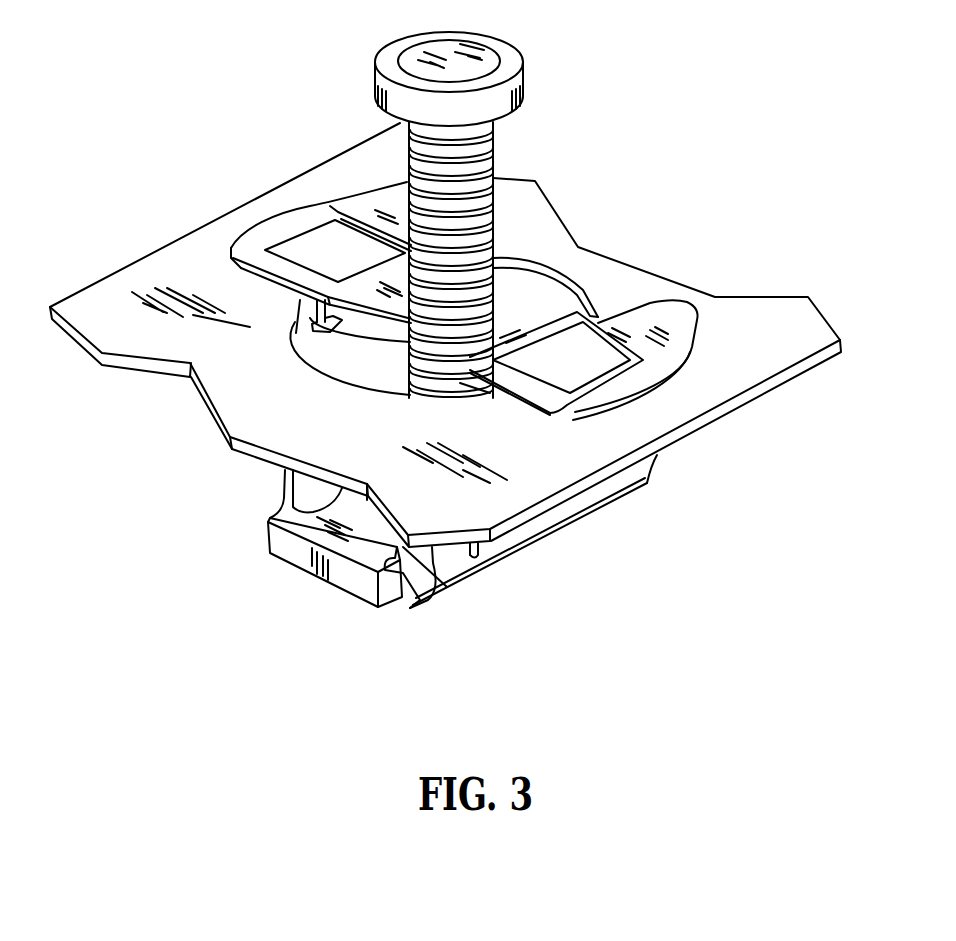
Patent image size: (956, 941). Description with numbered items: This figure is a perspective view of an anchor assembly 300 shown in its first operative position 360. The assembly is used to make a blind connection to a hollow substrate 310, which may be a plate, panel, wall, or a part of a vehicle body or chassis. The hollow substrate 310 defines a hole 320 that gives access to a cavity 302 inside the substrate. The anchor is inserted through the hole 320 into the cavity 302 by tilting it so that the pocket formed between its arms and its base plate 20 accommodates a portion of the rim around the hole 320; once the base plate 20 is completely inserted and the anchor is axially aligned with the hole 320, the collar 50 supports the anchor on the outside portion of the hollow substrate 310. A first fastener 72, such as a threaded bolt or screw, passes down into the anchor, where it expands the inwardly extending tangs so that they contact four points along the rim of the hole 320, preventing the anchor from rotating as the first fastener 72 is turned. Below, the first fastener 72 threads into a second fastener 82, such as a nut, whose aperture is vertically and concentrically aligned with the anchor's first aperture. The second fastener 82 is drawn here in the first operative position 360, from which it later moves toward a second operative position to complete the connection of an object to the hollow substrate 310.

The anchor assembly 300 is at (277, 81).
The cavity 302 is at (183, 427).
The hollow substrate 310 is at (150, 263).
The hole 320 is at (337, 363).
The collar 50 is at (385, 197).
The first fastener 72 is at (490, 158).
The second fastener 82 is at (290, 552).
The first operative position 360 is at (355, 583).
The base plate 20 is at (450, 560).